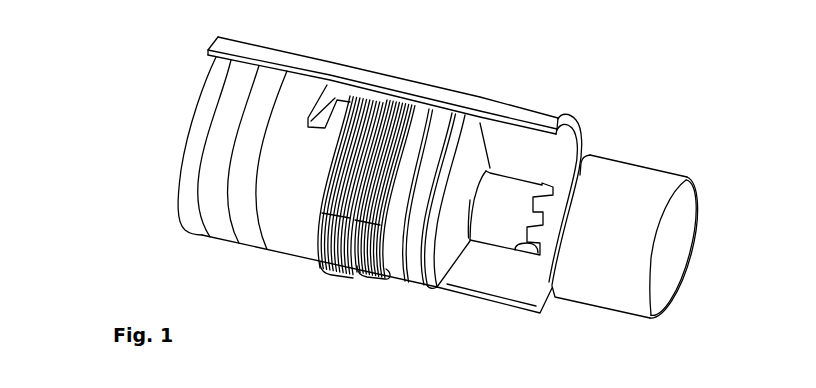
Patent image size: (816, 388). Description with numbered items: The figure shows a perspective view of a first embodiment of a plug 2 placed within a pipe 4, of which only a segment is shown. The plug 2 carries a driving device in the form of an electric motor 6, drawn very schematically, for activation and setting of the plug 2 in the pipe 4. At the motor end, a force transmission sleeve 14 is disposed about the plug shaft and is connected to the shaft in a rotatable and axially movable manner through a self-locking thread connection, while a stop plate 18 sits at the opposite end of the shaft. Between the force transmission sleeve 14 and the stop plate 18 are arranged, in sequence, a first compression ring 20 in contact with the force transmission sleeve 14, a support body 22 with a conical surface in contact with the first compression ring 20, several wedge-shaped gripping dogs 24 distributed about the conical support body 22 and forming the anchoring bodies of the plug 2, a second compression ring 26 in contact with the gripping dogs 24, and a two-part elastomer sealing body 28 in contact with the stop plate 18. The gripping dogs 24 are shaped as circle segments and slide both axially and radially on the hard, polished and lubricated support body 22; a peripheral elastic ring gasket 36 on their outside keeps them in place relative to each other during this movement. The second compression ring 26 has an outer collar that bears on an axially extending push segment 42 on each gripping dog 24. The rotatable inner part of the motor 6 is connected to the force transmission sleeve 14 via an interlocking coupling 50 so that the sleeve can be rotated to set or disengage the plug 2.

The plug 2 is at (170, 121).
The pipe 4 is at (570, 125).
The electric motor 6 is at (632, 188).
The force transmission sleeve 14 is at (505, 194).
The stop plate 18 is at (193, 165).
The first compression ring 20 is at (416, 270).
The support body 22 is at (393, 258).
The gripping dogs 24 is at (330, 268).
The second compression ring 26 is at (282, 240).
The sealing body 28 is at (212, 230).
The ring gasket 36 is at (392, 96).
The push segment 42 is at (333, 92).
The interlocking coupling 50 is at (515, 250).